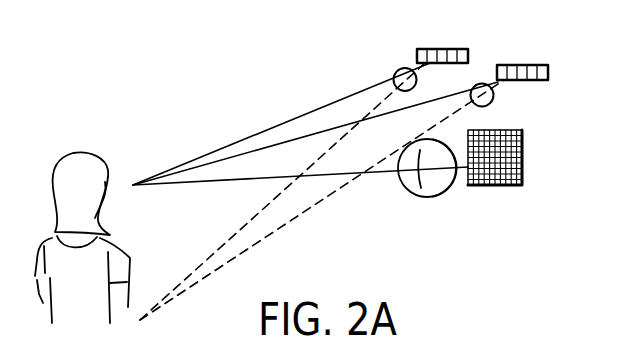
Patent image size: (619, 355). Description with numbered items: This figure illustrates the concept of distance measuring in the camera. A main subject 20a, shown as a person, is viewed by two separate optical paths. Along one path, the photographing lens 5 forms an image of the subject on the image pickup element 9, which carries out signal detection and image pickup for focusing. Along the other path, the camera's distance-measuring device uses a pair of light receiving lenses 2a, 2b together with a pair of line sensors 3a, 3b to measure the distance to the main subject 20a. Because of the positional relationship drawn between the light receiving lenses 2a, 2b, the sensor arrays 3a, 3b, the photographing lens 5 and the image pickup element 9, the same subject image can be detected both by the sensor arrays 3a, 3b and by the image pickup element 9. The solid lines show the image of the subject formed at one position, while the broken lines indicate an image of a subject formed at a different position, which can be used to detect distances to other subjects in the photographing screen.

The main subject 20a is at (130, 262).
The light receiving lens 2a is at (395, 74).
The light receiving lens 2b is at (496, 99).
The line sensor 3a is at (447, 48).
The line sensor 3b is at (524, 64).
The photographing lens 5 is at (447, 197).
The image pickup element 9 is at (514, 187).